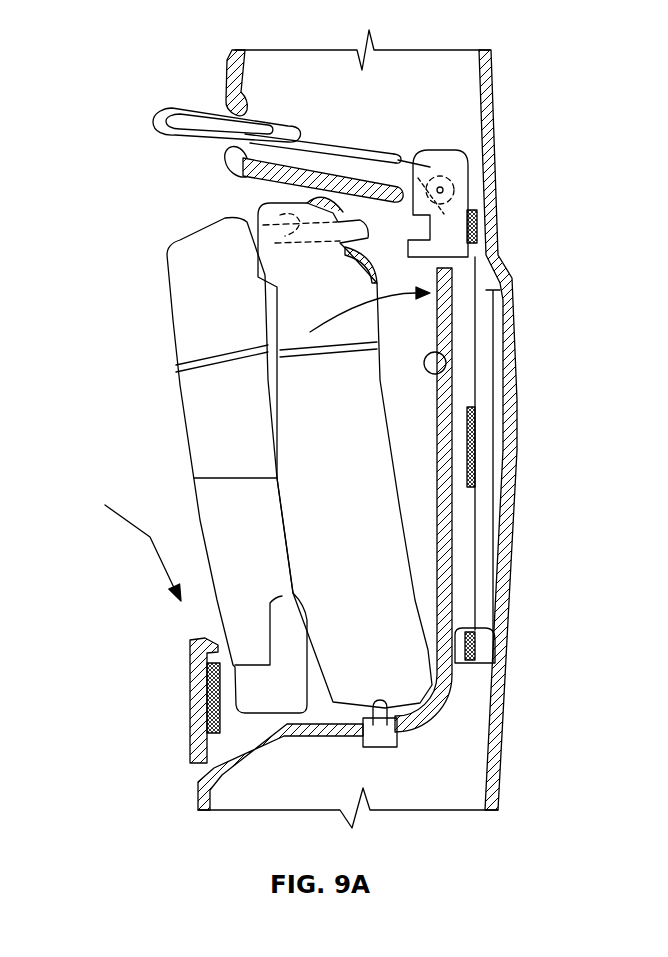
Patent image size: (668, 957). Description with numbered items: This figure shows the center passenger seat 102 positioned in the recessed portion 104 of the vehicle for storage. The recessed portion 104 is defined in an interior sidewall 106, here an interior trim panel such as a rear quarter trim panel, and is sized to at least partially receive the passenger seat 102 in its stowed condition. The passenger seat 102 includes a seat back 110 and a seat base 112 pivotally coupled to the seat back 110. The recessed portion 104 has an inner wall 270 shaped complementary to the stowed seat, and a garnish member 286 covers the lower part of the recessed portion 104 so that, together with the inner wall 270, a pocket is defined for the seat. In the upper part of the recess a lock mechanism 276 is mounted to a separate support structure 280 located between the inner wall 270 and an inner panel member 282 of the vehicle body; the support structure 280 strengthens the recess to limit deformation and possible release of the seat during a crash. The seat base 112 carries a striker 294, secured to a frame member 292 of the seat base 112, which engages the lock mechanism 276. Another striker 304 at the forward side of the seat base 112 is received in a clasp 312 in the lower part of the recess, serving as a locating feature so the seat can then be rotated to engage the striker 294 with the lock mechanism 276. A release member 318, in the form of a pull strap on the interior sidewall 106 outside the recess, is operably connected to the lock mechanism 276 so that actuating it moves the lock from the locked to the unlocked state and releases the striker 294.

The passenger seat 102 is at (108, 381).
The recessed portion 104 is at (242, 172).
The interior sidewall 106 is at (230, 70).
The seat back 110 is at (190, 420).
The seat base 112 is at (372, 482).
The inner wall 270 is at (450, 366).
The lock mechanism 276 is at (453, 153).
The support structure 280 is at (493, 303).
The inner panel member 282 is at (515, 478).
The garnish member 286 is at (190, 705).
The frame member 292 is at (243, 232).
The striker 294 is at (310, 252).
The striker 304 is at (377, 700).
The clasp 312 is at (380, 748).
The release member 318 is at (160, 122).